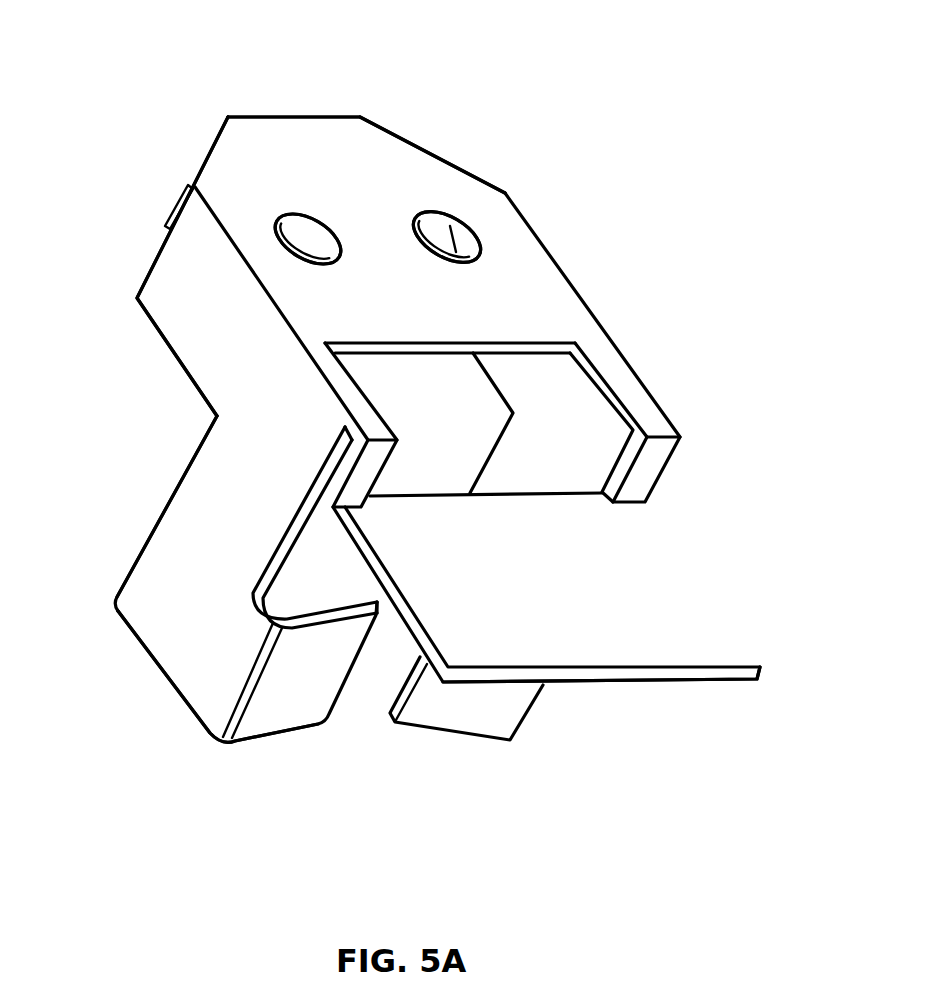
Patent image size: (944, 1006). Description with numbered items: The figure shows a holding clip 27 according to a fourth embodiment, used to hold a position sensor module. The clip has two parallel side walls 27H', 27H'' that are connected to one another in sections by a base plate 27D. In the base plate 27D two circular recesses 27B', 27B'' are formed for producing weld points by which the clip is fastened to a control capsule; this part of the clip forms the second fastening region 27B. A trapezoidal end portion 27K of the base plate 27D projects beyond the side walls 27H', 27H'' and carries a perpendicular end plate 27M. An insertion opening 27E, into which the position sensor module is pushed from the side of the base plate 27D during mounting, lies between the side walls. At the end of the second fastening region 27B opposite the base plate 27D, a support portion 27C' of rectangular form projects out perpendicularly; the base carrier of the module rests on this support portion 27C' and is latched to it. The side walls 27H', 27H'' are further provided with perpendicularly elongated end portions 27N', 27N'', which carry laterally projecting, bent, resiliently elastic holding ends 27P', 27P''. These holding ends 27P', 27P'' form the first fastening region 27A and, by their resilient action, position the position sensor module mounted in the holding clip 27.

The holding clip 27 is at (534, 194).
The first fastening region 27A is at (355, 693).
The second fastening region 27B is at (267, 243).
The circular recess 27B' is at (248, 170).
The circular recess 27B'' is at (541, 222).
The support portion 27C' is at (560, 594).
The base plate 27D is at (348, 167).
The insertion opening 27E is at (458, 449).
The side wall 27H' is at (205, 278).
The side wall 27H'' is at (520, 390).
The trapezoidal end portion 27K is at (260, 137).
The end plate 27M is at (180, 203).
The elongated end portion 27N' is at (133, 513).
The elongated end portion 27N'' is at (474, 423).
The holding end 27P' is at (212, 506).
The holding end 27P'' is at (509, 707).